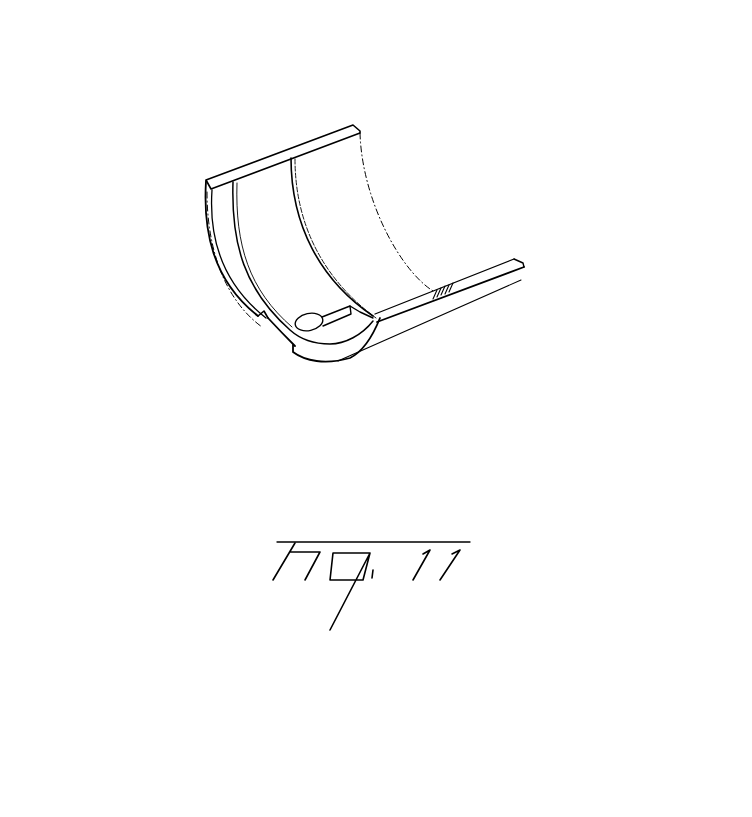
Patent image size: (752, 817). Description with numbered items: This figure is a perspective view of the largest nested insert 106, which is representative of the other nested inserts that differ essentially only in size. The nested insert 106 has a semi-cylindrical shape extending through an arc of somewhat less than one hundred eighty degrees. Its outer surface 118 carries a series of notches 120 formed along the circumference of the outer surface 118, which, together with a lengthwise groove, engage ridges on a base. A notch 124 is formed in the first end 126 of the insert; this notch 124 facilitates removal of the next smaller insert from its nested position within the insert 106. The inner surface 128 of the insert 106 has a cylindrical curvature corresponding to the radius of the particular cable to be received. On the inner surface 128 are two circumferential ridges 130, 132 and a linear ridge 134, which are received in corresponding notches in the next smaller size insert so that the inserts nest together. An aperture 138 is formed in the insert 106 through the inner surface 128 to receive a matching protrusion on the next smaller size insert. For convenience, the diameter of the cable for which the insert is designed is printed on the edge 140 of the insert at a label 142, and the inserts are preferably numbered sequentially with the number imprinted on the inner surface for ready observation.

The nested insert 106 is at (405, 156).
The outer surface 118 is at (482, 234).
The notches 120 is at (382, 328).
The notch 124 is at (262, 327).
The first end 126 is at (210, 234).
The inner surface 128 is at (391, 263).
The circumferential ridge 130 is at (247, 237).
The circumferential ridge 132 is at (300, 217).
The linear ridge 134 is at (327, 302).
The aperture 138 is at (304, 311).
The edge 140 is at (514, 260).
The label 142 is at (454, 282).